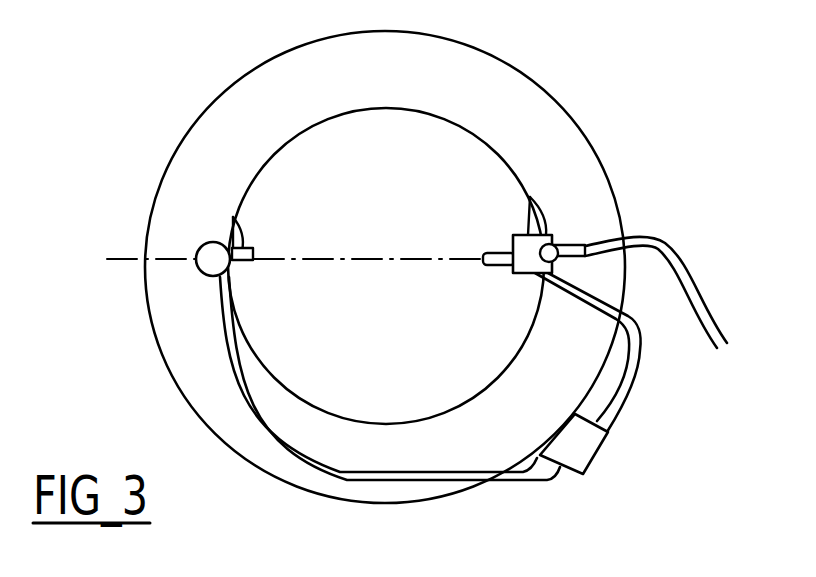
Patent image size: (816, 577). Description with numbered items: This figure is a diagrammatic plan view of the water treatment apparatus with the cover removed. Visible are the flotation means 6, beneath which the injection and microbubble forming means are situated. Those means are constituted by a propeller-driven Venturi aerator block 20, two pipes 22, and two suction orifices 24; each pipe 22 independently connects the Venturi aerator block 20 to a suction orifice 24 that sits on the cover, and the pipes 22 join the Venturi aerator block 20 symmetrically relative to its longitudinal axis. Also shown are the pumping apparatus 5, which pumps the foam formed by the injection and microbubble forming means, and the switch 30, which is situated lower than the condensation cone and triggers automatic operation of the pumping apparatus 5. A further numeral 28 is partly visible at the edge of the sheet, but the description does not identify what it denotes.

The flotation means 6 is at (583, 178).
The switch 30 is at (233, 217).
The suction orifice 24 is at (210, 252).
The pumping apparatus 5 is at (573, 240).
The pipe 22 is at (627, 372).
The propeller-driven Venturi aerator block 20 is at (583, 452).
The element 28 is at (711, 575).